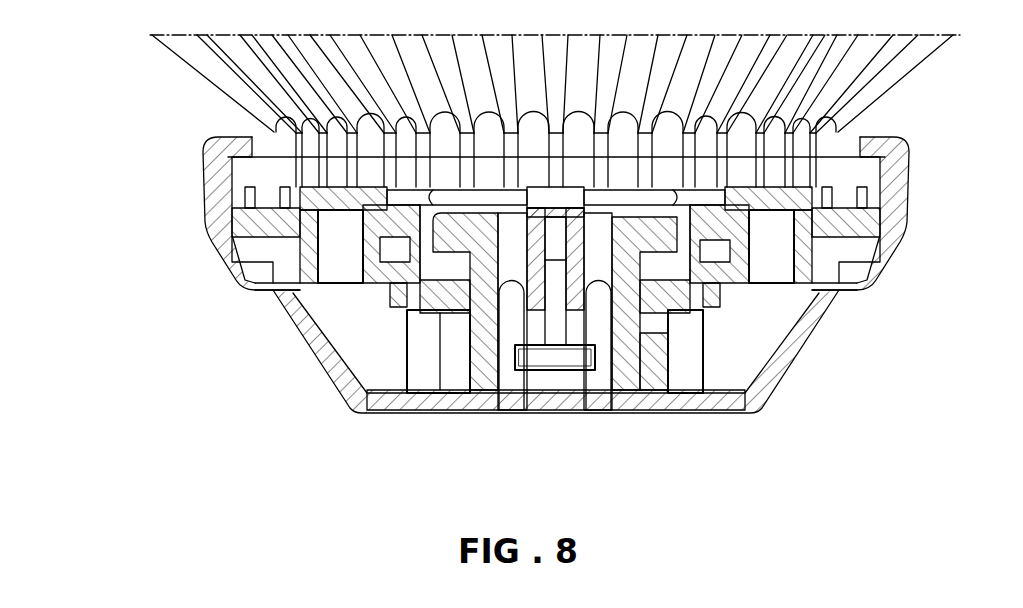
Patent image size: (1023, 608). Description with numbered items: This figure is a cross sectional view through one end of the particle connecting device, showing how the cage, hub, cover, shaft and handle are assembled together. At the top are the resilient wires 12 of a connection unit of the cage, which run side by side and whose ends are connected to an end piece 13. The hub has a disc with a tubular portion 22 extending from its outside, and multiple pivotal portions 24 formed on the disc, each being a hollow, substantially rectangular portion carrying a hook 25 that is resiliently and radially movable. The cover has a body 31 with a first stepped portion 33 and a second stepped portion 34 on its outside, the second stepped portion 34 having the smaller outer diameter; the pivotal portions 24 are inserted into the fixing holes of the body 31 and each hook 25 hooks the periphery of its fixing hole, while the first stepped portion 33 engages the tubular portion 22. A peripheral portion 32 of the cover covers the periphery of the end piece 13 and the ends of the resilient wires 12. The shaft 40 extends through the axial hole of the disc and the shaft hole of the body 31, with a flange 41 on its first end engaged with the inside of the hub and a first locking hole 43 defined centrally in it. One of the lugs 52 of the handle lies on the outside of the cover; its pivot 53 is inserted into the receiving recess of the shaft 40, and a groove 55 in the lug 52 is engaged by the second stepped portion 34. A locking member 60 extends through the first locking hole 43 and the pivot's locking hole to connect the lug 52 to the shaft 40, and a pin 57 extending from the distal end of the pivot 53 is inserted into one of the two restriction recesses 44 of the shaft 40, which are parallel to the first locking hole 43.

The resilient wires 12 is at (178, 78).
The end piece 13 is at (843, 223).
The tubular portion 22 is at (705, 262).
The pivotal portions 24 is at (757, 262).
The hook 25 is at (820, 240).
The body 31 is at (250, 265).
The peripheral portion 32 is at (205, 190).
The first stepped portion 33 is at (390, 290).
The second stepped portion 34 is at (437, 333).
The shaft 40 is at (670, 312).
The flange 41 is at (648, 236).
The first locking hole 43 is at (600, 300).
The restriction recesses 44 is at (507, 262).
The lugs 52 is at (352, 405).
The pivot 53 is at (533, 325).
The groove 55 is at (398, 300).
The pin 57 is at (508, 307).
The locking member 60 is at (558, 372).